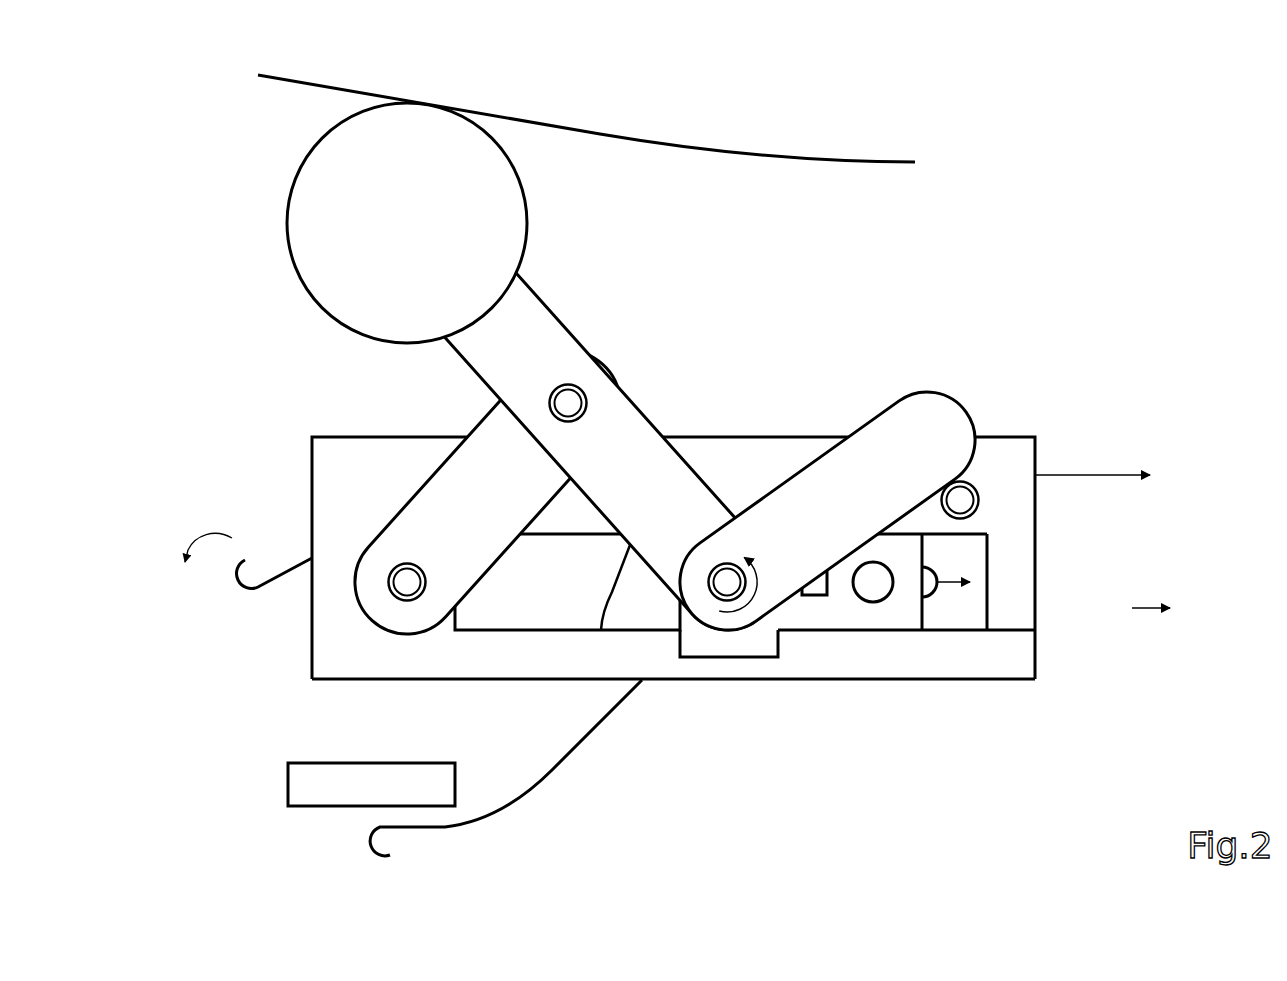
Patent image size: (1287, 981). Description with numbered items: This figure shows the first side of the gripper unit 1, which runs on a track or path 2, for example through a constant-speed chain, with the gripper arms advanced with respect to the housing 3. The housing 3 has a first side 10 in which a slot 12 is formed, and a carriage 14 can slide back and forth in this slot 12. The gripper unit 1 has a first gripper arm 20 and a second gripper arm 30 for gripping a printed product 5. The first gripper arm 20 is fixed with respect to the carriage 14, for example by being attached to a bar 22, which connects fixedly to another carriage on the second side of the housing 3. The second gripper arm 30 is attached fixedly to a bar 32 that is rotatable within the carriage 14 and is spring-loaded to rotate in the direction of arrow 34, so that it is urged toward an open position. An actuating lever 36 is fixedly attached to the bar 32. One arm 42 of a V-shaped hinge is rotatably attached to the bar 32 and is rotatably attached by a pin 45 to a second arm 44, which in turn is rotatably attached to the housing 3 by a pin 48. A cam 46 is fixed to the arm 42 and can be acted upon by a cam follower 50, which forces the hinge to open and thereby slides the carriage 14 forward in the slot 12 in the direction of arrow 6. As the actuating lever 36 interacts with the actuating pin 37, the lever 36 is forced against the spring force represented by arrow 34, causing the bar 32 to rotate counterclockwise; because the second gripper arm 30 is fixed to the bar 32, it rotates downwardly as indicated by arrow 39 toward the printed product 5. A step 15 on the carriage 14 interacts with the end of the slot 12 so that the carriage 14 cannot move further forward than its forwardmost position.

The gripper unit 1 is at (732, 565).
The track or path 2 is at (1100, 474).
The housing 3 is at (733, 437).
The printed product 5 is at (357, 777).
The arrow 6 is at (968, 584).
The first side 10 is at (955, 660).
The slot 12 is at (560, 602).
The carriage 14 is at (693, 645).
The step 15 is at (780, 645).
The first gripper arm 20 is at (557, 770).
The bar 22 is at (815, 592).
The second gripper arm 30 is at (283, 560).
The bar 32 is at (727, 582).
The arrow 34 is at (737, 612).
The actuating lever 36 is at (925, 393).
The actuating pin 37 is at (980, 505).
The arrow 39 is at (193, 538).
The arm 42 is at (540, 328).
The second arm 44 is at (450, 520).
The pin 45 is at (547, 395).
The cam 46 is at (313, 173).
The pin 48 is at (402, 586).
The cam follower 50 is at (620, 135).